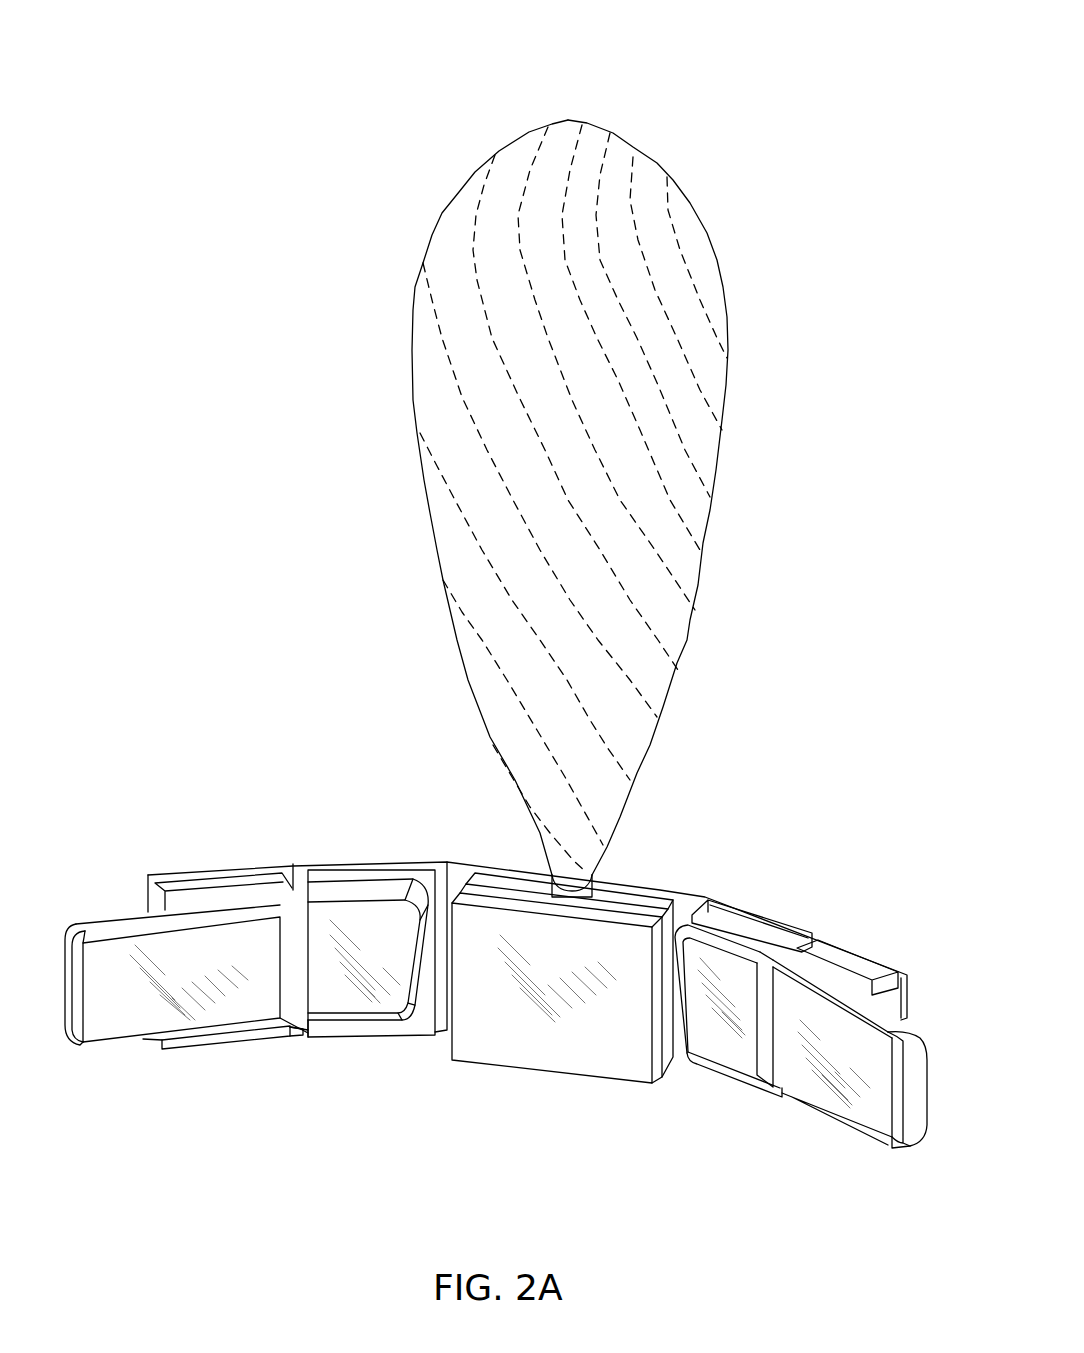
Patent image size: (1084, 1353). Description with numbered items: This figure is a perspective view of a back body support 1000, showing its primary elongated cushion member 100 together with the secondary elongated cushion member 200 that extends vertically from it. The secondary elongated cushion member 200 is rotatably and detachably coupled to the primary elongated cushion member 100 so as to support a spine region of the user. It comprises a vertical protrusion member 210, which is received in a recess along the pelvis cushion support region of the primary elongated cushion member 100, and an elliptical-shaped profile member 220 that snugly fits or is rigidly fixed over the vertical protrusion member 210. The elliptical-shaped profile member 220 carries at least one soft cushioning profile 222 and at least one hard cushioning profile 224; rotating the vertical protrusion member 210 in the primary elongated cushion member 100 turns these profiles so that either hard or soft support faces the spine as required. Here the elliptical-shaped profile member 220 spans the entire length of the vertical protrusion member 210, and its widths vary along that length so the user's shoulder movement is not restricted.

The back body support 1000 is at (695, 50).
The secondary elongated cushion member 200 is at (689, 156).
The vertical protrusion member 210 is at (600, 885).
The elliptical-shaped profile member 220 is at (697, 587).
The soft cushioning profile 222 is at (712, 390).
The hard cushioning profile 224 is at (430, 401).
The primary elongated cushion member 100 is at (775, 880).